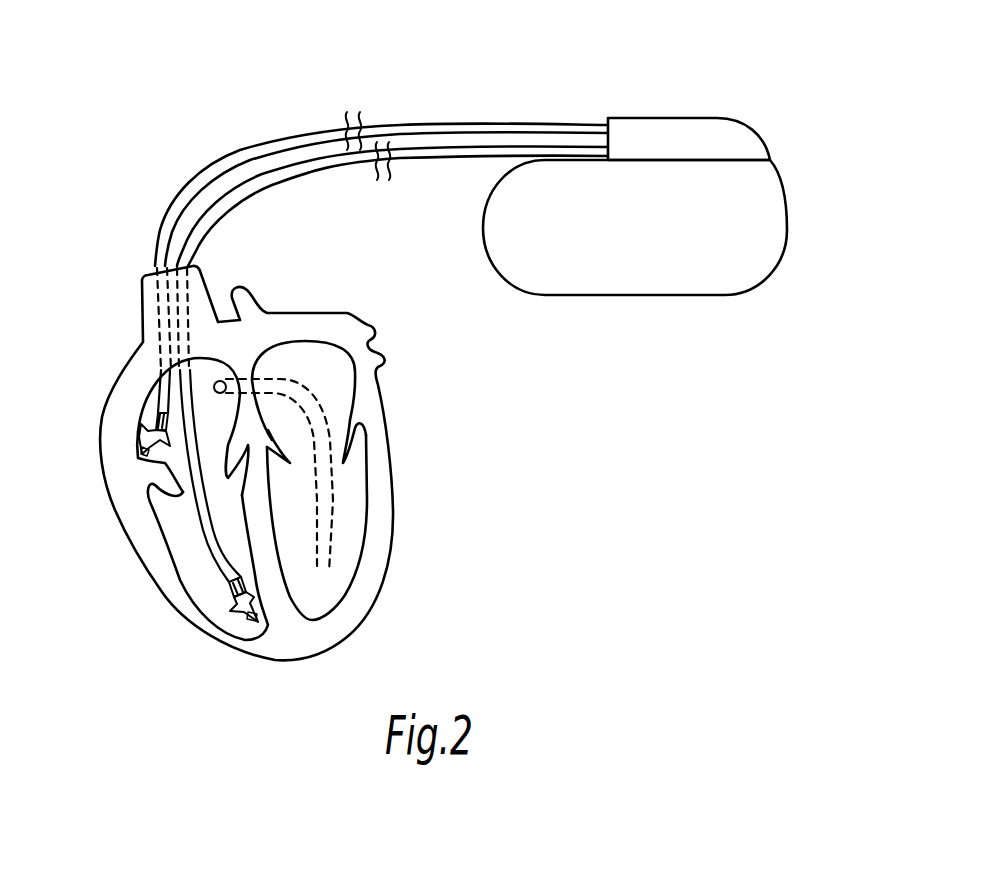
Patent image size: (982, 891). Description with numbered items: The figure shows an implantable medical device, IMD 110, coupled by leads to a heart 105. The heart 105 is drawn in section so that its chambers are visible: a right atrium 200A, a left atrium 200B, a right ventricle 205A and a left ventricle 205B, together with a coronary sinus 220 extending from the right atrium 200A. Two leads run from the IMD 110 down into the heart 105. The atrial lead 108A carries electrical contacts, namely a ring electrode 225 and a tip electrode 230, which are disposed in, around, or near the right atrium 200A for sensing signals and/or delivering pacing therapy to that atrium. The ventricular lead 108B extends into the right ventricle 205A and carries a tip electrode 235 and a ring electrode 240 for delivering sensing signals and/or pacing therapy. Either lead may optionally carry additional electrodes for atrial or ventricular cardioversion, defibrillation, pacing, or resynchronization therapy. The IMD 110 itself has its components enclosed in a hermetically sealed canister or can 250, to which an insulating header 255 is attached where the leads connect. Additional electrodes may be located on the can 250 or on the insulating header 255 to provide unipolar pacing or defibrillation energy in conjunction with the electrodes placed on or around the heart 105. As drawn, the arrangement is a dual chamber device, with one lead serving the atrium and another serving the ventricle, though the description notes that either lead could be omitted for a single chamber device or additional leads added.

The heart 105 is at (392, 468).
The atrial lead 108A is at (287, 141).
The ventricular lead 108B is at (300, 175).
The IMD 110 is at (662, 163).
The right atrium 200A is at (167, 462).
The left atrium 200B is at (337, 380).
The right ventricle 205A is at (181, 525).
The left ventricle 205B is at (333, 583).
The coronary sinus 220 is at (216, 391).
The ring electrode 225 is at (157, 416).
The tip electrode 230 is at (140, 451).
The tip electrode 235 is at (250, 627).
The ring electrode 240 is at (234, 592).
The can 250 is at (787, 200).
The insulating header 255 is at (770, 135).